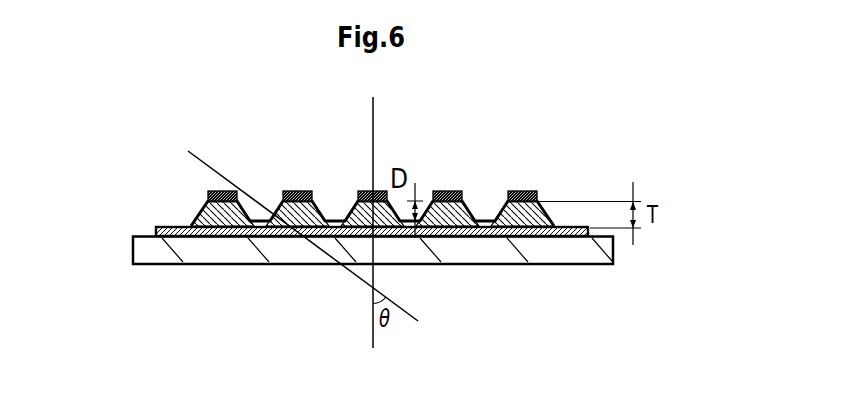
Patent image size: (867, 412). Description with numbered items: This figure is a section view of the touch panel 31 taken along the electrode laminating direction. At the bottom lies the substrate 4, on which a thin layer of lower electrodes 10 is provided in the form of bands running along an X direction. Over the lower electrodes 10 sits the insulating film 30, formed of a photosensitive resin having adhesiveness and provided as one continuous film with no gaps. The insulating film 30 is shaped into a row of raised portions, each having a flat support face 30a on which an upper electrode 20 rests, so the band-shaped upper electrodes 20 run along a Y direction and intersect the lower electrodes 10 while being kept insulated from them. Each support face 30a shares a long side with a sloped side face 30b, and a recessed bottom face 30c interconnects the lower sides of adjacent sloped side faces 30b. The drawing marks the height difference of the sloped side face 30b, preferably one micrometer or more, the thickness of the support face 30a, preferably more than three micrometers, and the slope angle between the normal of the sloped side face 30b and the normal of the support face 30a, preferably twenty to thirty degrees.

The substrate 4 is at (163, 253).
The lower electrodes 10 is at (172, 226).
The upper electrodes 20 is at (541, 193).
The insulating film 30 is at (523, 218).
The support face 30a is at (523, 215).
The sloped side face 30b is at (480, 216).
The recessed bottom face 30c is at (480, 224).
The touch panel 31 is at (428, 130).